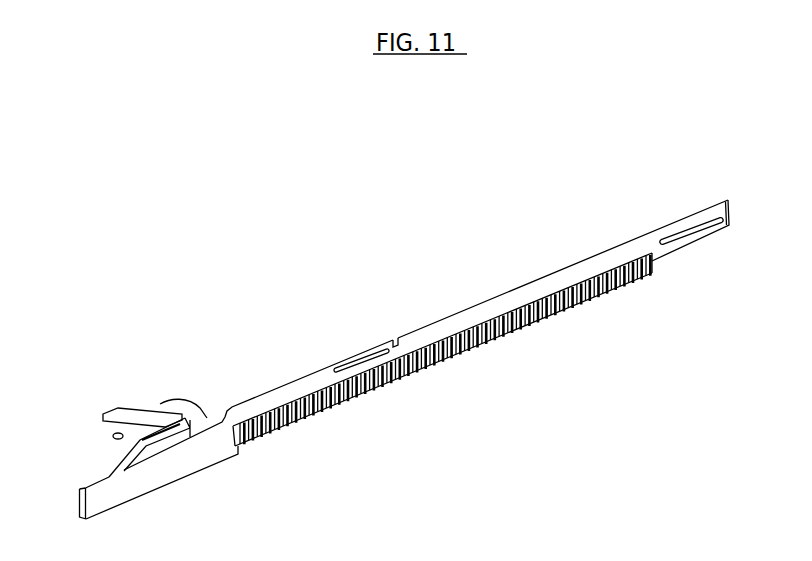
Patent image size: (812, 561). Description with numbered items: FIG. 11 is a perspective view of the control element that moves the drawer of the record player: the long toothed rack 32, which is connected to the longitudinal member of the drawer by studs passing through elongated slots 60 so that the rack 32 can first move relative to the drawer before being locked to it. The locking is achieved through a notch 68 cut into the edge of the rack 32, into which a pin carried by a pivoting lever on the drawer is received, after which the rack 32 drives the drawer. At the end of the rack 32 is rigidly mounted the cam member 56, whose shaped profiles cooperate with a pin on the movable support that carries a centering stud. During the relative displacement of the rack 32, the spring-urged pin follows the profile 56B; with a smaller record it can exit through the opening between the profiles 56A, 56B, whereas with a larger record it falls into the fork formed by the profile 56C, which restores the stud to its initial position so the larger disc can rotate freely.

The rack 32 is at (685, 245).
The slots 60 is at (367, 359).
The notch 68 is at (394, 339).
The cam member 56 is at (125, 450).
The profile 56A is at (134, 415).
The profile 56B is at (178, 417).
The profile 56C is at (113, 437).